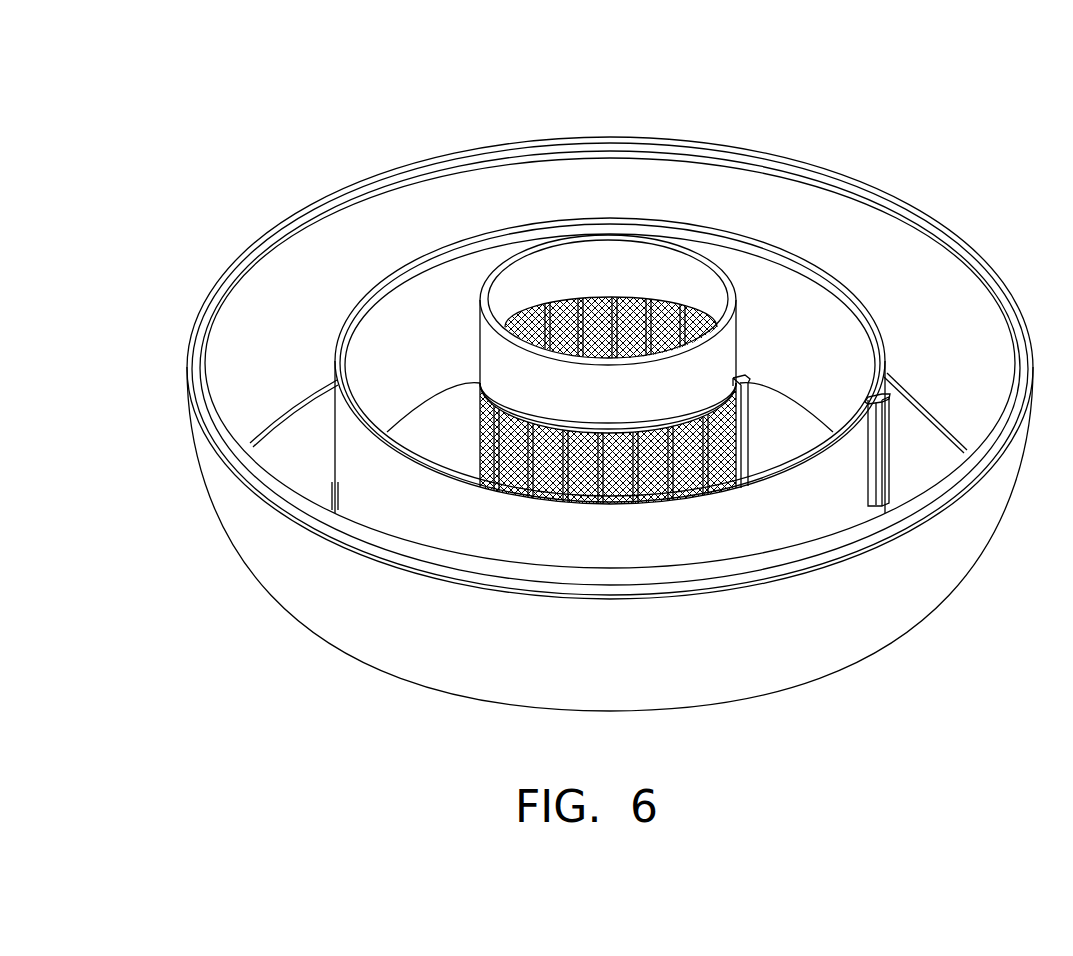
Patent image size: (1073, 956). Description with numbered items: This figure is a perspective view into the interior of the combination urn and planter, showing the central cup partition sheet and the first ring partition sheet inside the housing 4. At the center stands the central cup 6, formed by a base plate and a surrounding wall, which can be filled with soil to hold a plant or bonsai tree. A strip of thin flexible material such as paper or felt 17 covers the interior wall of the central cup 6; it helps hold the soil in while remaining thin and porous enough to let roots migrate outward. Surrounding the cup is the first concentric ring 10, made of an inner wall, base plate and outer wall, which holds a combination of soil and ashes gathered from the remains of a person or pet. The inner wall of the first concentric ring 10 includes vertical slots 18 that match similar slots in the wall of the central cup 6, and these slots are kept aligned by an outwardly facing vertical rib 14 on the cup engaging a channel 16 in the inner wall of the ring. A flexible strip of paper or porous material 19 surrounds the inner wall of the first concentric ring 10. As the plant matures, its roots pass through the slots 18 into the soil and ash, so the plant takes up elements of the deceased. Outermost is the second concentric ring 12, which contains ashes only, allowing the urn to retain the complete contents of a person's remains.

The bowl housing 4 is at (322, 608).
The central cup 6 is at (626, 240).
The first concentric ring 10 is at (750, 285).
The second concentric ring 12 is at (850, 263).
The outwardly facing vertical rib 14 is at (880, 397).
The channel 16 is at (873, 435).
The strip of thin flexible material 17 is at (575, 303).
The vertical slots 18 is at (653, 497).
The flexible strip of paper or porous material 19 is at (547, 498).